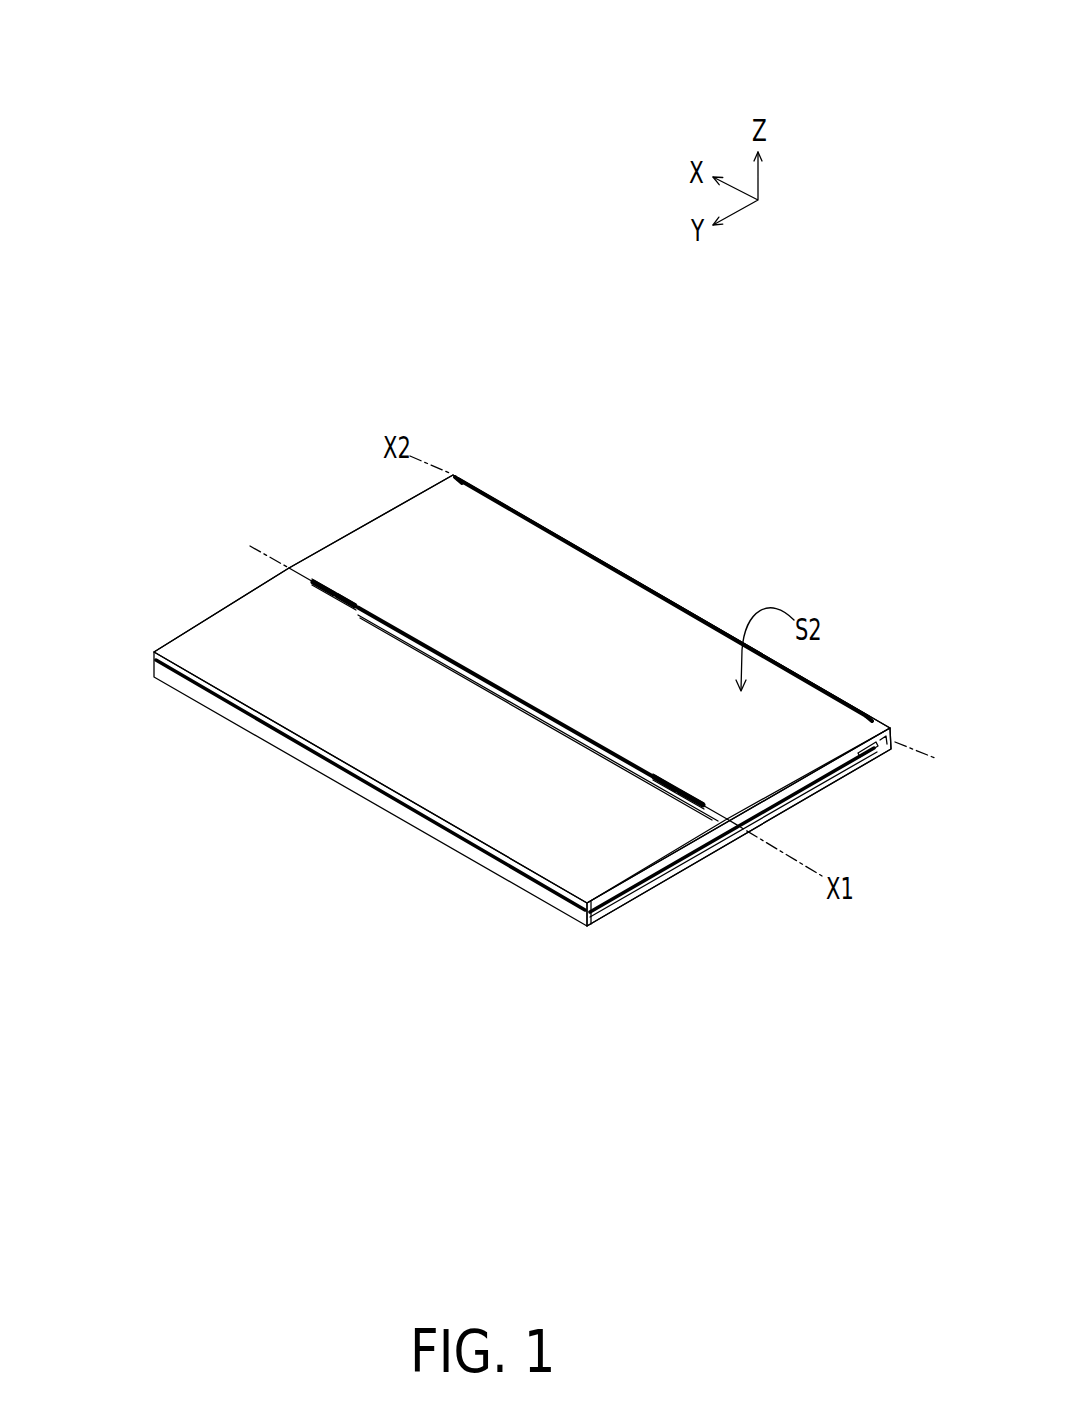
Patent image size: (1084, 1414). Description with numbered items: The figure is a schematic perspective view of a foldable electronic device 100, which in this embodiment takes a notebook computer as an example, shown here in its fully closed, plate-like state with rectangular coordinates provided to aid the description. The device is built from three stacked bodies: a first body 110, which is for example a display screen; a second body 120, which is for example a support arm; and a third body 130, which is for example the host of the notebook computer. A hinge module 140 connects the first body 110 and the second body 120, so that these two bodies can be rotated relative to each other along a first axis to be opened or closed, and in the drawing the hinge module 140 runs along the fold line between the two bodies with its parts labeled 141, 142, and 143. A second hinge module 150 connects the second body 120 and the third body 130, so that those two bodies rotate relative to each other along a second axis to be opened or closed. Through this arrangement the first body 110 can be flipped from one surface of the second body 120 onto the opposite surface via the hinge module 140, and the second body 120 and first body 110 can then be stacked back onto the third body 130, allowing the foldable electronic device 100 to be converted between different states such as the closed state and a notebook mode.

The foldable electronic device 100 is at (529, 793).
The first body 110 is at (440, 709).
The second body 120 is at (589, 630).
The third body 130 is at (739, 832).
The hinge module 140 is at (390, 412).
The first radiator 141 is at (682, 769).
The second radiator 142 is at (320, 547).
The third radiator 143 is at (663, 598).
The hinge module 150 is at (688, 570).